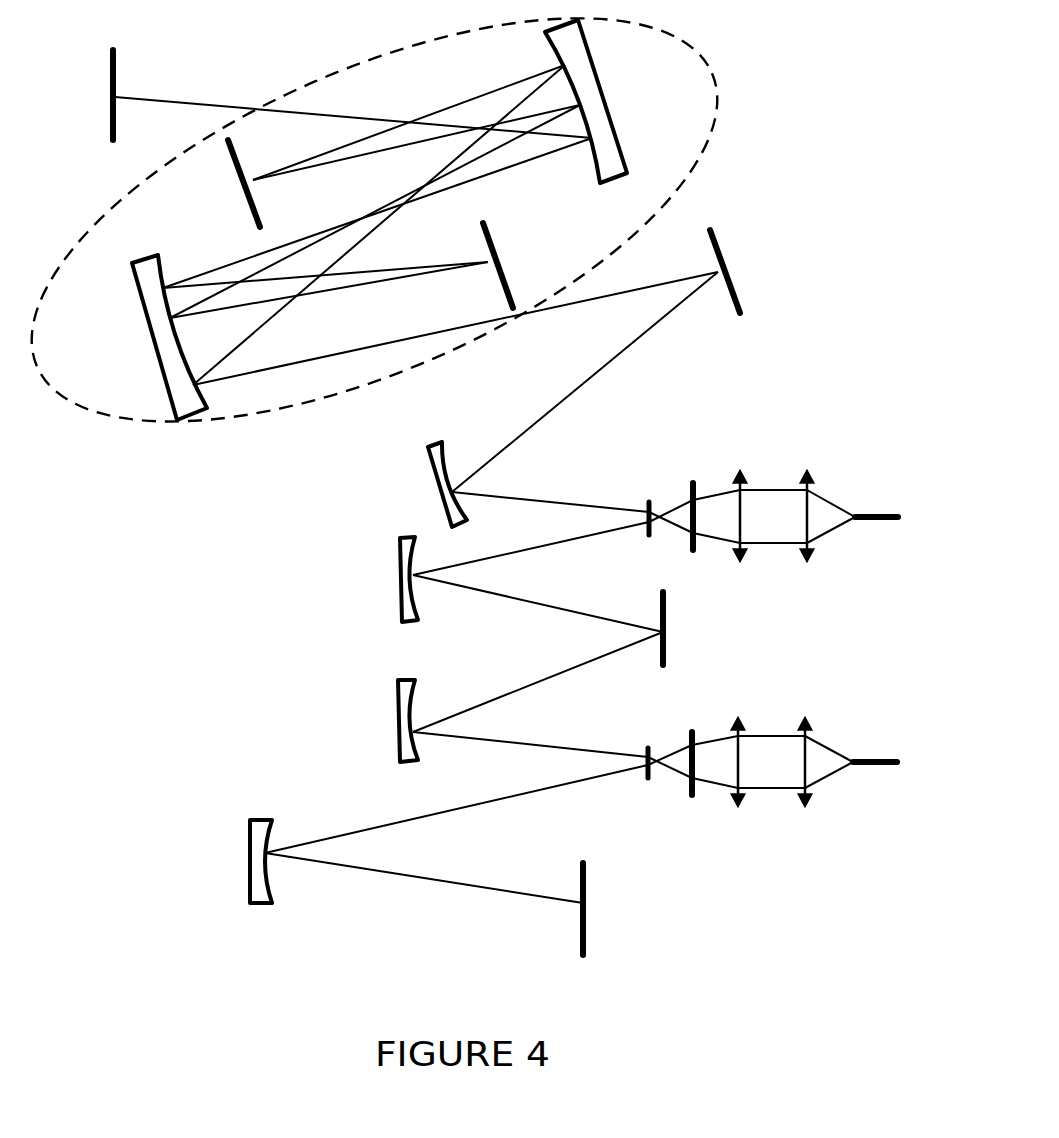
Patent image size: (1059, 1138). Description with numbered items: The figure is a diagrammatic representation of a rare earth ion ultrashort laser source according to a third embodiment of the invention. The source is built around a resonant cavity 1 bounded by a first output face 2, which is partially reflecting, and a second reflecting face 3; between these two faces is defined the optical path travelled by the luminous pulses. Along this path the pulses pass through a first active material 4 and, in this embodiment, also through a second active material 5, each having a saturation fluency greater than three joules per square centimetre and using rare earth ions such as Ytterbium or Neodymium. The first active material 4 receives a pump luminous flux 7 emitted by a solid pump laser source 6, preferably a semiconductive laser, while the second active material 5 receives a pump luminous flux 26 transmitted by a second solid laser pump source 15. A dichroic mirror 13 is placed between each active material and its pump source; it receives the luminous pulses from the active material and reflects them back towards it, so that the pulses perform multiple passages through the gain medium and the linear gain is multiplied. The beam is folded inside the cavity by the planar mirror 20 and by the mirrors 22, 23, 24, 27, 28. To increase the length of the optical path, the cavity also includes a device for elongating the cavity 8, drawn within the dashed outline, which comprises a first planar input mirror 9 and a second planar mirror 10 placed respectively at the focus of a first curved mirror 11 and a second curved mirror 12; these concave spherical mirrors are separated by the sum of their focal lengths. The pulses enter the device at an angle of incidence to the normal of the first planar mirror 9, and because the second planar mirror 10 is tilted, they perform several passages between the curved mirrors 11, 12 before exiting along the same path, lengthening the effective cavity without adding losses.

The resonant cavity 1 is at (192, 540).
The first output face 2 is at (110, 73).
The second reflecting face 3 is at (586, 943).
The first active material 4 is at (649, 500).
The second active material 5 is at (649, 780).
The pump laser source 6 is at (870, 515).
The pump luminous flux 7 is at (833, 535).
The device for elongating the cavity 8 is at (673, 37).
The first planar input mirror 9 is at (250, 215).
The second planar mirror 10 is at (503, 270).
The first curved mirror 11 is at (620, 140).
The second curved mirror 12 is at (147, 333).
The dichroic mirror 13 is at (693, 485).
The second solid laser pump source 15 is at (860, 759).
The planar mirror 20 is at (722, 242).
The concave mirror 22 is at (437, 485).
The concave mirror 23 is at (400, 575).
The concave mirror 24 is at (250, 855).
The pump luminous flux 26 is at (831, 780).
The folding mirror 27 is at (398, 728).
The folding mirror 28 is at (666, 630).